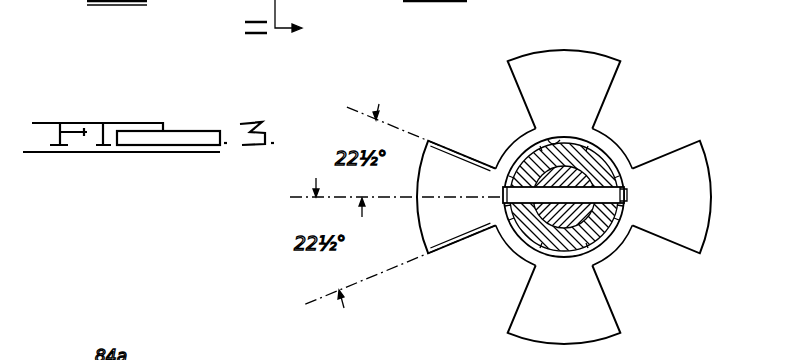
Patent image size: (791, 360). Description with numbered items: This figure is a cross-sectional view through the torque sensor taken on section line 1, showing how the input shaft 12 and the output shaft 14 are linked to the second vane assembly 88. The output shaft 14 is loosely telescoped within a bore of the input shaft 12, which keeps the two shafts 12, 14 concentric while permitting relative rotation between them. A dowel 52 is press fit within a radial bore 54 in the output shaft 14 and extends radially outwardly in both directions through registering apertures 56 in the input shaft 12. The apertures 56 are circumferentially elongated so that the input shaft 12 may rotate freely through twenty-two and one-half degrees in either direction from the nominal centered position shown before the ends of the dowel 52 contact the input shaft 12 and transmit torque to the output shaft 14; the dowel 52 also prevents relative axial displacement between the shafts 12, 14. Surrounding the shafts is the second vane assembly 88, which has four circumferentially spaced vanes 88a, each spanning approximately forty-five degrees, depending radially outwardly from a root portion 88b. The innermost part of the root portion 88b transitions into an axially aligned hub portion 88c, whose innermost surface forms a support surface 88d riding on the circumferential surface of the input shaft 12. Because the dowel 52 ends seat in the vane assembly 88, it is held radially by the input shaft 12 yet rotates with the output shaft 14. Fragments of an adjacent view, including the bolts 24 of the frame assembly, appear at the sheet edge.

The second vane assembly 88 is at (706, 153).
The vanes 88a is at (578, 62).
The root portion 88b is at (525, 143).
The hub portion 88c is at (560, 258).
The support surface 88d is at (552, 142).
The input shaft 12 is at (576, 165).
The output shaft 14 is at (597, 232).
The dowel 52 is at (625, 193).
The radial bore 54 is at (545, 190).
The registering apertures 56 is at (620, 167).
The bolts 24 is at (298, 6).
The section line indicator 1 is at (281, 24).